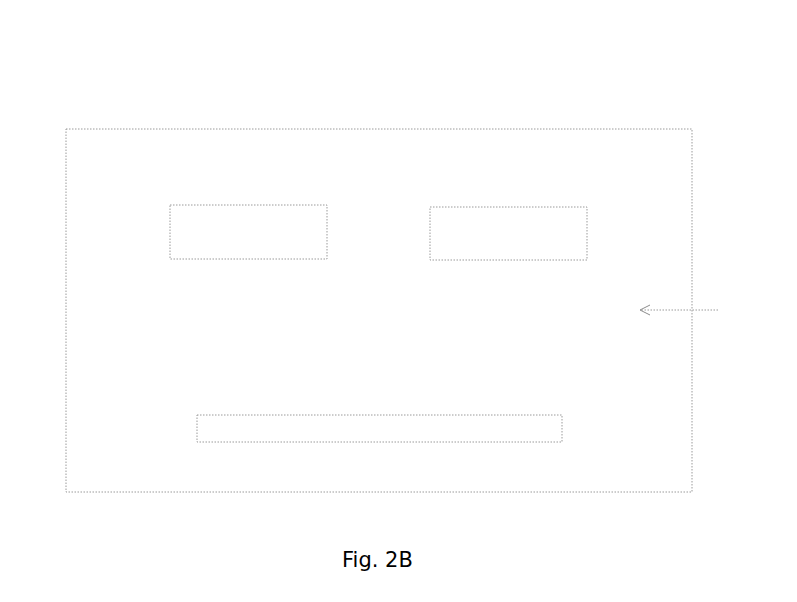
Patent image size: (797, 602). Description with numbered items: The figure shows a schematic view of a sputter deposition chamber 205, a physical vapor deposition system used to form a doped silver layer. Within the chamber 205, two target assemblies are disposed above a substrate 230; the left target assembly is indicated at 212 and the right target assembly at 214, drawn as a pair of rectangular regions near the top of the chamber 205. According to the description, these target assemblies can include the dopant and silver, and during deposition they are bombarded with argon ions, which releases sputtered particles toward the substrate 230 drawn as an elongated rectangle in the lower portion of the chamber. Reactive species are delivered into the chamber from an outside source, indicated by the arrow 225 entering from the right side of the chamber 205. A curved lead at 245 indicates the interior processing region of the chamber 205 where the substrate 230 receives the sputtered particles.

The sputter deposition chamber 205 is at (82, 92).
The first sensor region 212 is at (248, 232).
The second sensor region 214 is at (510, 233).
The direction of view 225 is at (667, 310).
The substrate 230 is at (222, 428).
The curved surface 245 is at (408, 337).